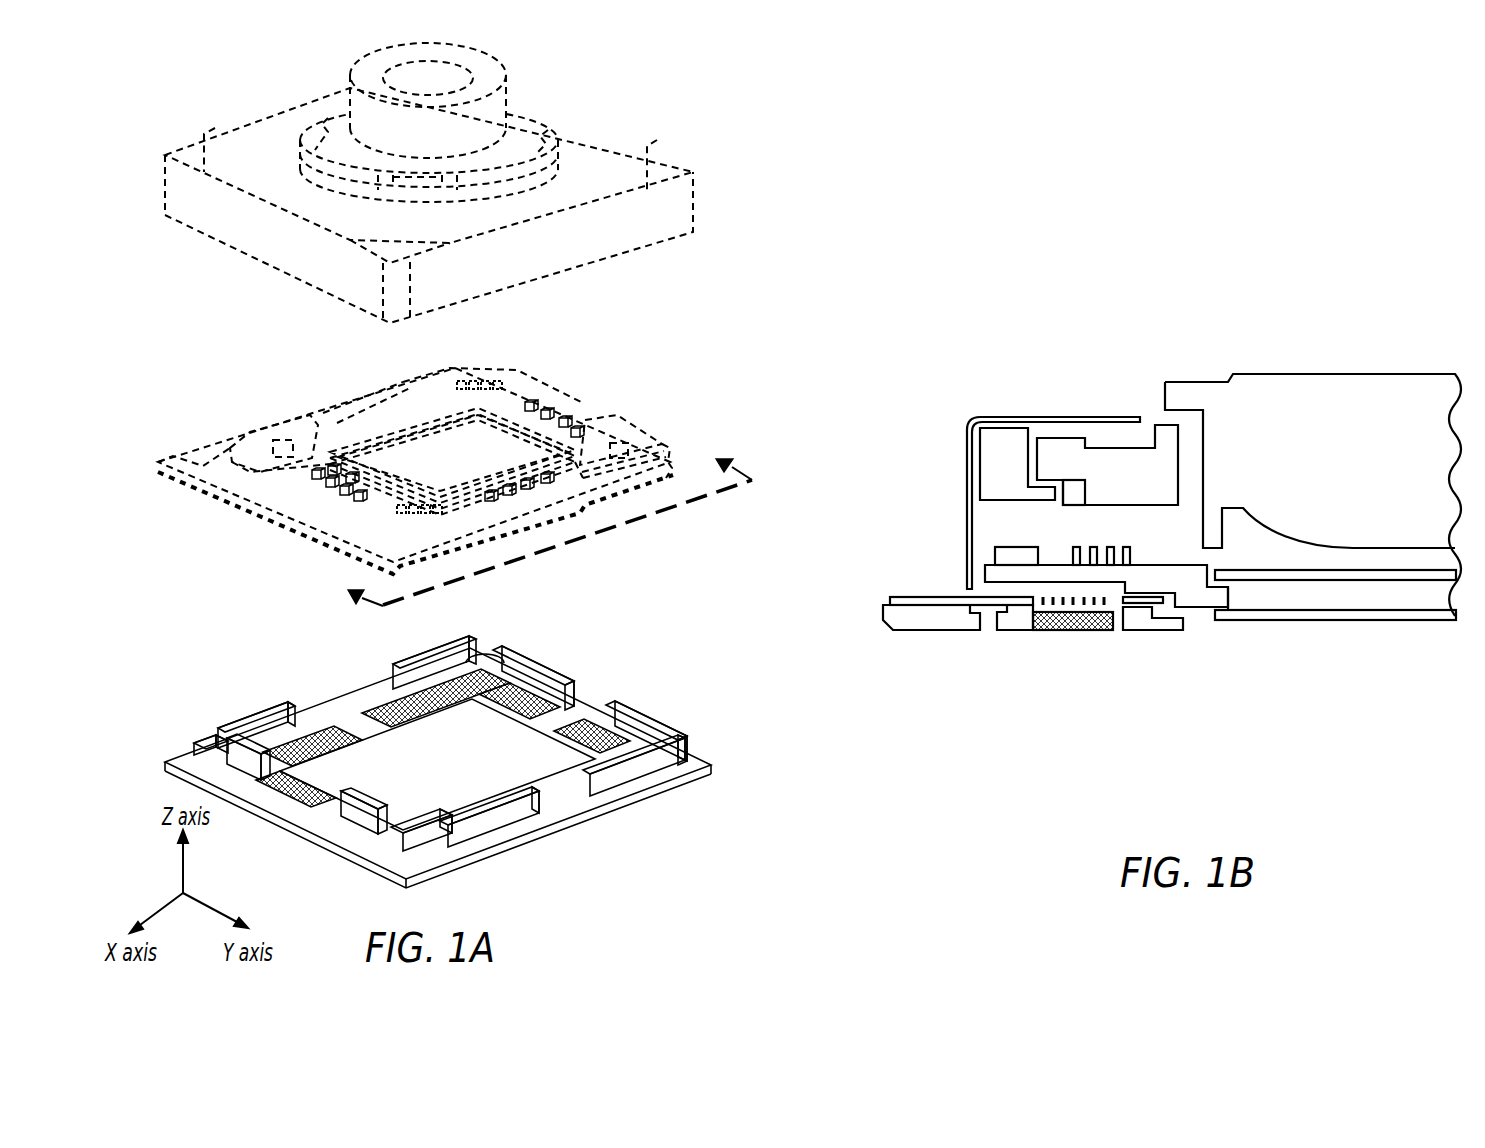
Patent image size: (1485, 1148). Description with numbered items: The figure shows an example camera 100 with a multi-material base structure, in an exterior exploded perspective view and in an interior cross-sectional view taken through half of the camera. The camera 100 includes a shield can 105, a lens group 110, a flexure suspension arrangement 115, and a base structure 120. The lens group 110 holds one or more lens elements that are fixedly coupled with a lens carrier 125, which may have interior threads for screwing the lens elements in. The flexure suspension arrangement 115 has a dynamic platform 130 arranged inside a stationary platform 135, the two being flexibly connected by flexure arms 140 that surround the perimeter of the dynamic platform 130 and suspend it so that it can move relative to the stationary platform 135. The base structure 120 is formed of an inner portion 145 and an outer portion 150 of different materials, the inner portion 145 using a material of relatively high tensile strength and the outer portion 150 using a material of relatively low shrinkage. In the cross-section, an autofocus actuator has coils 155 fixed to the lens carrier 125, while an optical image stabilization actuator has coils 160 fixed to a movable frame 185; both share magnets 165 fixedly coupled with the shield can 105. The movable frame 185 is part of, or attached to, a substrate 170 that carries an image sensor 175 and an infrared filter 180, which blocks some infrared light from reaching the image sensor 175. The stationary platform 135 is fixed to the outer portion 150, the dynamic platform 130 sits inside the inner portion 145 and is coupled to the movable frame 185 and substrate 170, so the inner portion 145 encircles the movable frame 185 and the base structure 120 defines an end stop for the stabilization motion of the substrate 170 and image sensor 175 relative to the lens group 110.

In FIG. 1B, the camera 100 is at (972, 112).
In FIG. 1A, the shield can 105 is at (660, 240).
In FIG. 1B, the shield can 105 is at (966, 480).
In FIG. 1A, the lens group 110 is at (507, 100).
In FIG. 1B, the lens group 110 is at (1290, 354).
In FIG. 1A, the flexure suspension arrangement 115 is at (350, 401).
In FIG. 1A, the base structure 120 is at (535, 762).
In FIG. 1B, the lens carrier 125 is at (1162, 426).
In FIG. 1B, the dynamic platform 130 is at (1160, 603).
In FIG. 1B, the stationary platform 135 is at (936, 596).
In FIG. 1B, the flexure arms 140 is at (1093, 605).
In FIG. 1A, the inner portion 145 is at (322, 732).
In FIG. 1B, the inner portion 145 is at (1038, 632).
In FIG. 1A, the outer portion 150 is at (543, 822).
In FIG. 1B, the outer portion 150 is at (945, 632).
In FIG. 1B, the coils 155 is at (1075, 490).
In FIG. 1B, the coils 160 is at (1004, 556).
In FIG. 1B, the magnets 165 is at (1000, 452).
In FIG. 1B, the substrate 170 is at (1190, 565).
In FIG. 1B, the image sensor 175 is at (1268, 614).
In FIG. 1B, the infrared filter 180 is at (1357, 582).
In FIG. 1B, the movable frame 185 is at (1160, 628).